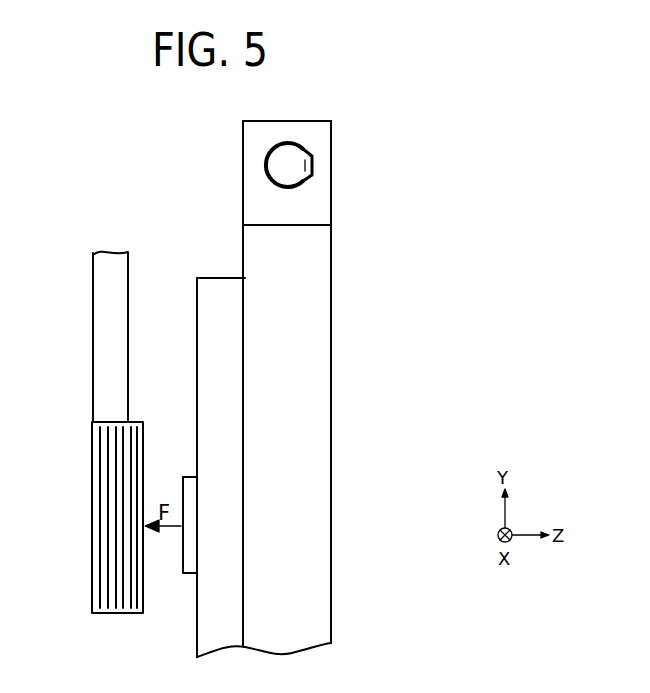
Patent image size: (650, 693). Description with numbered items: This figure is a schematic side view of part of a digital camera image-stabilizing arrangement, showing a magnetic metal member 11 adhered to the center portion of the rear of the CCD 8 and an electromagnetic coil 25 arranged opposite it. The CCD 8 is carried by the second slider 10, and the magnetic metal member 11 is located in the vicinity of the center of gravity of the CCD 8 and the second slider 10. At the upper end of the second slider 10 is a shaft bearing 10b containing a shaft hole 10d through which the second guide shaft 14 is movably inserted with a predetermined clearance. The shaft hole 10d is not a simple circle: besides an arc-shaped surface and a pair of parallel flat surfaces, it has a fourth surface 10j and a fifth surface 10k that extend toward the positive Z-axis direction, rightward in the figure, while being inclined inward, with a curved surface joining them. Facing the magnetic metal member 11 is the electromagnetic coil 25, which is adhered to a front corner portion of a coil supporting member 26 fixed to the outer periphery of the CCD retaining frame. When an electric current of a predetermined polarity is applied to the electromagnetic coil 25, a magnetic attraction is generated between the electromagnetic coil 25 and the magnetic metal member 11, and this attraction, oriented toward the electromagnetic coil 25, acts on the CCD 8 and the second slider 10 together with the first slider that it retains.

The CCD 8 is at (197, 326).
The second slider 10 is at (331, 420).
The shaft bearing 10b is at (243, 199).
The shaft hole 10d is at (313, 163).
The fourth surface 10j is at (299, 146).
The fifth surface 10k is at (300, 183).
The magnetic metal member 11 is at (181, 480).
The second guide shaft 14 is at (277, 163).
The electromagnetic coil 25 is at (92, 506).
The coil supporting member 26 is at (93, 299).